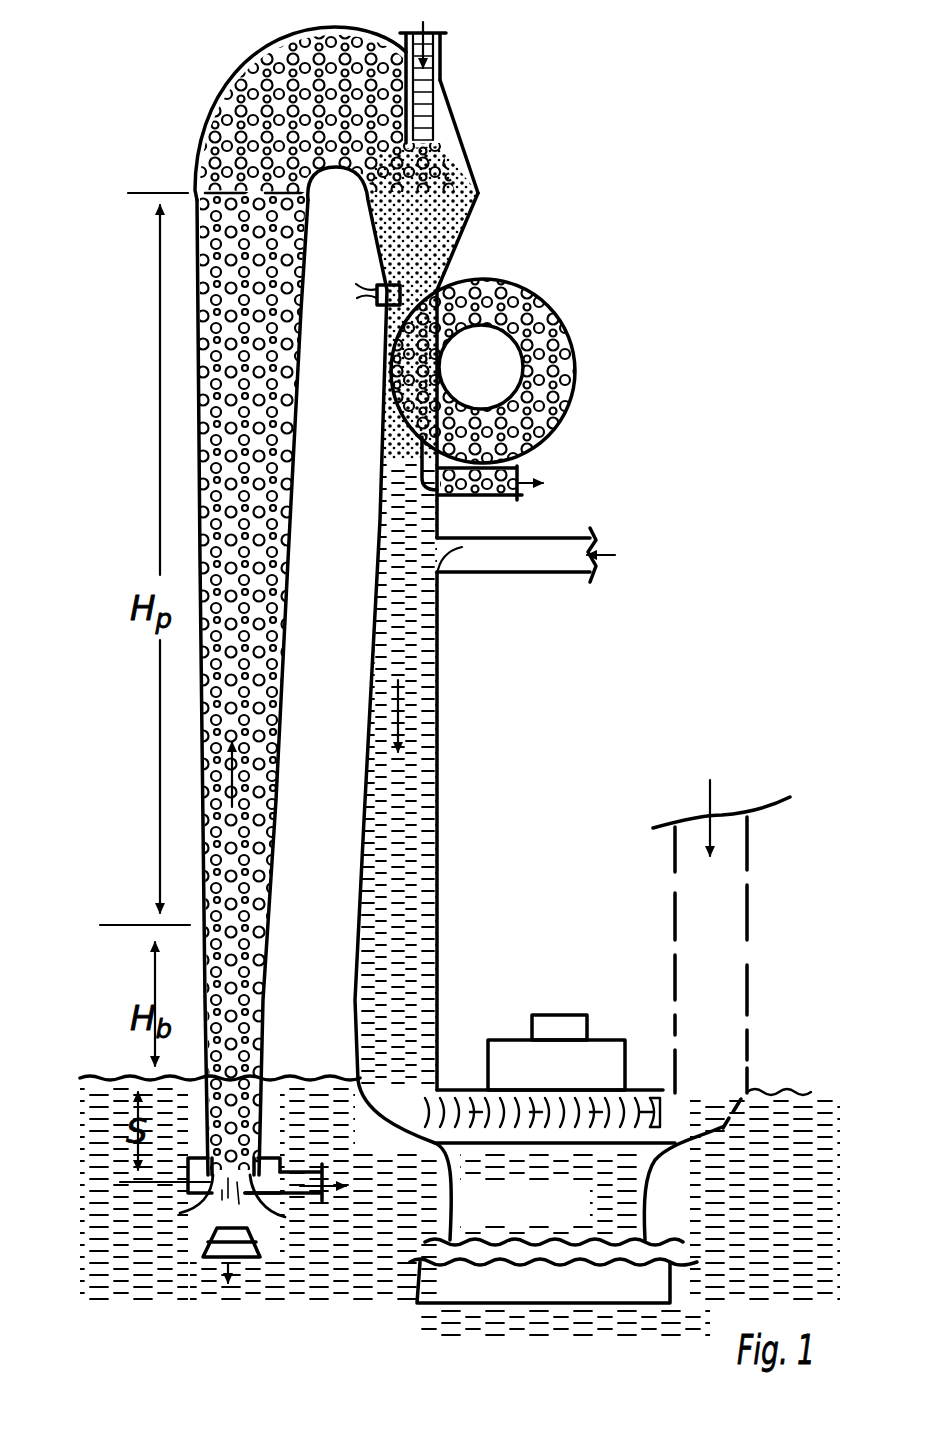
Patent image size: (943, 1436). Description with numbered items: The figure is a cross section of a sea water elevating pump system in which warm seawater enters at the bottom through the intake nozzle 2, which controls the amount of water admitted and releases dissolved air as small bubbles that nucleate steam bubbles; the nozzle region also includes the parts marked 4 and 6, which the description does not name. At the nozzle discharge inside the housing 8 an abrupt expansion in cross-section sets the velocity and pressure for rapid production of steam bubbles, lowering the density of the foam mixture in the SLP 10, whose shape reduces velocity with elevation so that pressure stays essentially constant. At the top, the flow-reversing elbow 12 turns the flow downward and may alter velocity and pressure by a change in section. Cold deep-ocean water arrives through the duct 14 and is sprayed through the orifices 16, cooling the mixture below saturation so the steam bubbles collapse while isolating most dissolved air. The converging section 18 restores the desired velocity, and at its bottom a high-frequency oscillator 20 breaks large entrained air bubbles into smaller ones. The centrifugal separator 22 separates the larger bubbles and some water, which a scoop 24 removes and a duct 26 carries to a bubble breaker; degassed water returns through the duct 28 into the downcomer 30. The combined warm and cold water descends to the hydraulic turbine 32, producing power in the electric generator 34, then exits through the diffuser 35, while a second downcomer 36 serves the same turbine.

The intake nozzle 2 is at (268, 1157).
The gas inlet nozzle 4 is at (265, 1243).
The drain outlet 6 is at (297, 1172).
The housing 8 is at (282, 1157).
The SLP 10 is at (300, 662).
The flow-reversing elbow 12 is at (468, 144).
The duct 14 is at (442, 58).
The orifices 16 is at (478, 193).
The converging section 18 is at (460, 250).
The high-frequency oscillator 20 is at (377, 307).
The centrifugal separator 22 is at (582, 406).
The scoop 24 is at (413, 457).
The duct 26 is at (493, 505).
The duct 28 is at (557, 580).
The downcomer 30 is at (443, 780).
The hydraulic turbine 32 is at (430, 1118).
The electric generator 34 is at (568, 1010).
The diffuser 35 is at (530, 1312).
The second downcomer 36 is at (672, 930).